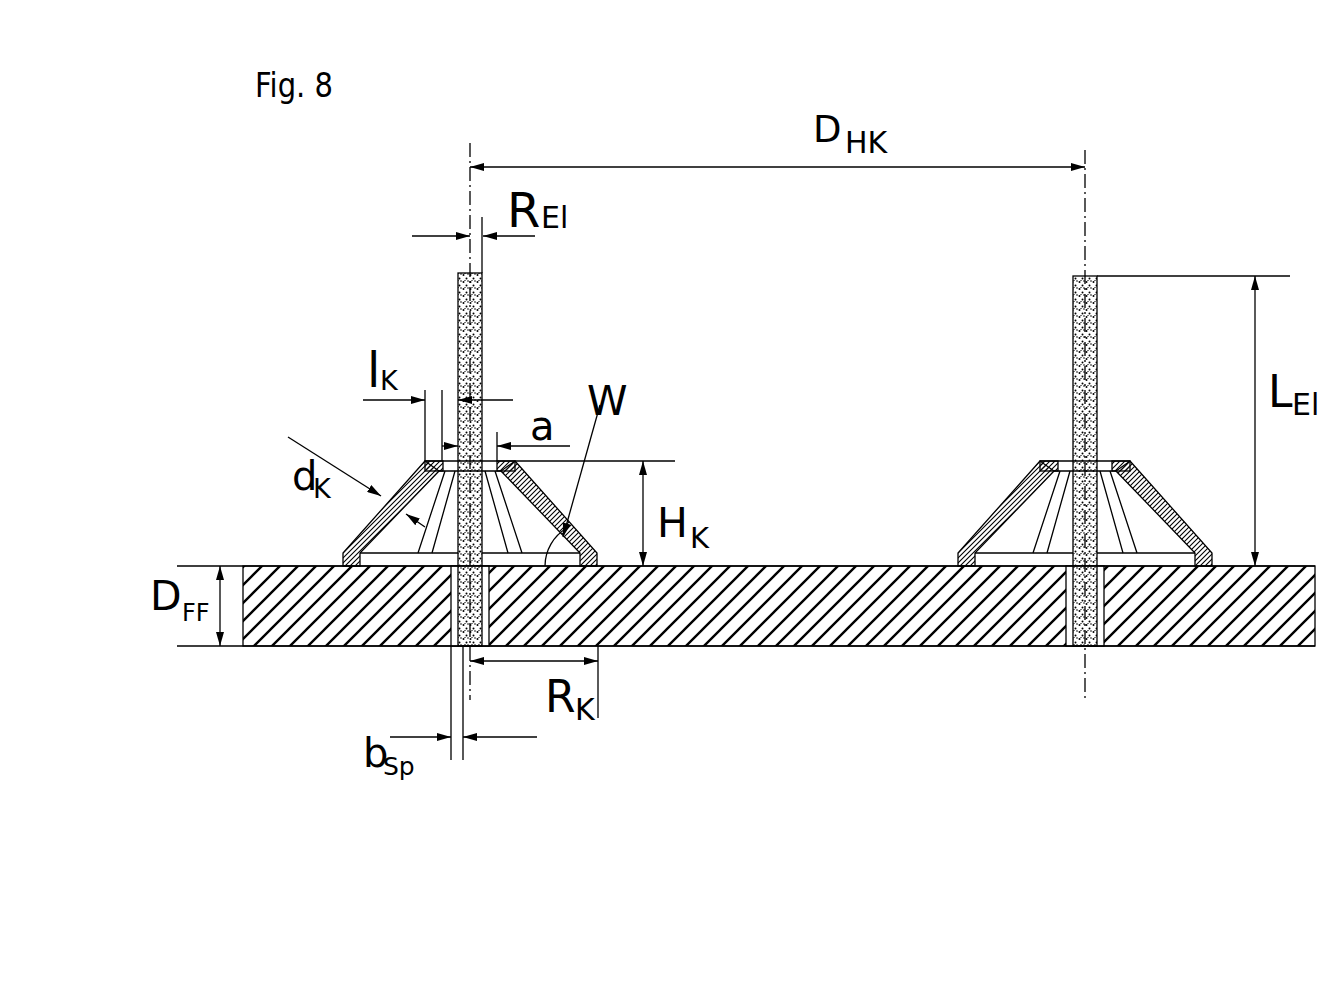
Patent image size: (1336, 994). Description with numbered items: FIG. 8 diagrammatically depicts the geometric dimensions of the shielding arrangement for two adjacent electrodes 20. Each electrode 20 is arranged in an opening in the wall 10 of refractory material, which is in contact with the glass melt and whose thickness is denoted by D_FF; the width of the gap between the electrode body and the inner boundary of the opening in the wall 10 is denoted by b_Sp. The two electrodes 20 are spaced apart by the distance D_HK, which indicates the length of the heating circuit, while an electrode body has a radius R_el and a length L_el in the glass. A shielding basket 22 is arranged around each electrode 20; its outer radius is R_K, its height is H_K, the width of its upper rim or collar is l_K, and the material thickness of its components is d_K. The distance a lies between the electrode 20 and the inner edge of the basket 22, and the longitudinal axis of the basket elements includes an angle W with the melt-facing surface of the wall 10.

The wall 10 is at (872, 630).
The electrode 20 is at (1073, 330).
The shielding basket 22 is at (1027, 465).